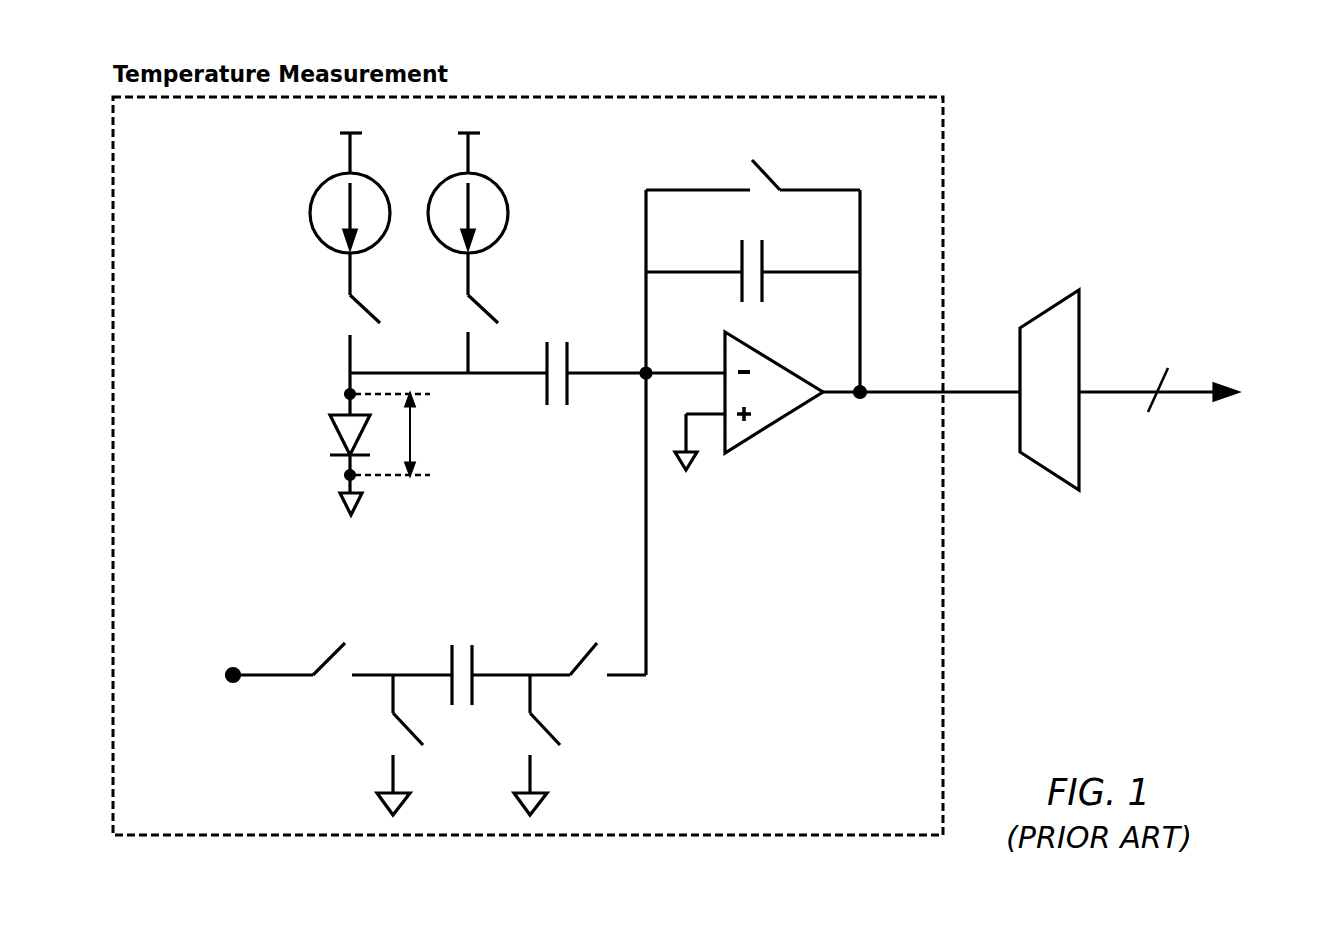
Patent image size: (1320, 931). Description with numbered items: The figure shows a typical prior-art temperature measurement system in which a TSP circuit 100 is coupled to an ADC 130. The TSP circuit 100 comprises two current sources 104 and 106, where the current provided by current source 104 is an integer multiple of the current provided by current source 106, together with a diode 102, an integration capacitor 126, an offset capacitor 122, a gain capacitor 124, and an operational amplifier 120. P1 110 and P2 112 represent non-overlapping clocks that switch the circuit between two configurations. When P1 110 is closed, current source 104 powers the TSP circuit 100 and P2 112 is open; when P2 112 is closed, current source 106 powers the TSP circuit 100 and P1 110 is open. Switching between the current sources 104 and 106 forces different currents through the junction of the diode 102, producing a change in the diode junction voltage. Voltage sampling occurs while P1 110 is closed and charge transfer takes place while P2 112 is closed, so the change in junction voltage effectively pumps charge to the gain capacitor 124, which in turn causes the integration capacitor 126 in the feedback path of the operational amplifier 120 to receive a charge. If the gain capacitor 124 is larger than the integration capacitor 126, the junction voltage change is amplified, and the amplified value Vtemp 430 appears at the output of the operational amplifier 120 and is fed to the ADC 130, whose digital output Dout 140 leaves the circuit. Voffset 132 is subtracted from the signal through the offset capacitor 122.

The TSP circuit 100 is at (937, 820).
The diode 102 is at (335, 434).
The current source 104 is at (332, 175).
The current source 106 is at (450, 175).
The P1 clock switch 110 is at (362, 300).
The P2 clock switch 112 is at (480, 300).
The operational amplifier 120 is at (745, 440).
The offset capacitor 122 is at (476, 657).
The gain capacitor 124 is at (564, 346).
The integration capacitor 126 is at (740, 260).
The ADC 130 is at (1082, 307).
The Voffset 132 is at (192, 676).
The digital output Dout 140 is at (1189, 397).
The temperature voltage Vtemp 430 is at (921, 424).